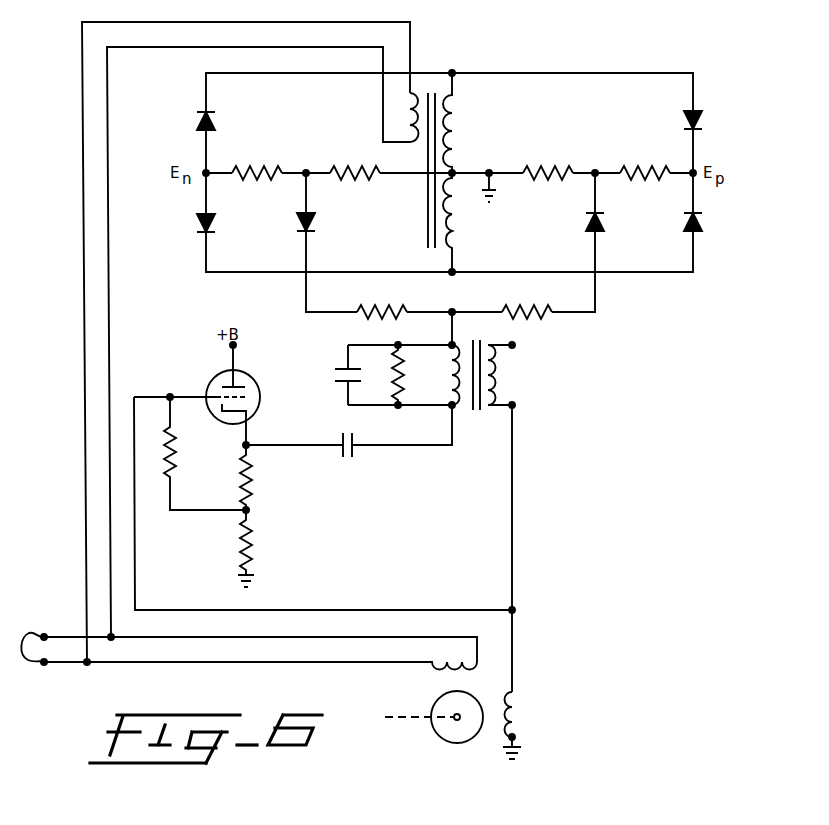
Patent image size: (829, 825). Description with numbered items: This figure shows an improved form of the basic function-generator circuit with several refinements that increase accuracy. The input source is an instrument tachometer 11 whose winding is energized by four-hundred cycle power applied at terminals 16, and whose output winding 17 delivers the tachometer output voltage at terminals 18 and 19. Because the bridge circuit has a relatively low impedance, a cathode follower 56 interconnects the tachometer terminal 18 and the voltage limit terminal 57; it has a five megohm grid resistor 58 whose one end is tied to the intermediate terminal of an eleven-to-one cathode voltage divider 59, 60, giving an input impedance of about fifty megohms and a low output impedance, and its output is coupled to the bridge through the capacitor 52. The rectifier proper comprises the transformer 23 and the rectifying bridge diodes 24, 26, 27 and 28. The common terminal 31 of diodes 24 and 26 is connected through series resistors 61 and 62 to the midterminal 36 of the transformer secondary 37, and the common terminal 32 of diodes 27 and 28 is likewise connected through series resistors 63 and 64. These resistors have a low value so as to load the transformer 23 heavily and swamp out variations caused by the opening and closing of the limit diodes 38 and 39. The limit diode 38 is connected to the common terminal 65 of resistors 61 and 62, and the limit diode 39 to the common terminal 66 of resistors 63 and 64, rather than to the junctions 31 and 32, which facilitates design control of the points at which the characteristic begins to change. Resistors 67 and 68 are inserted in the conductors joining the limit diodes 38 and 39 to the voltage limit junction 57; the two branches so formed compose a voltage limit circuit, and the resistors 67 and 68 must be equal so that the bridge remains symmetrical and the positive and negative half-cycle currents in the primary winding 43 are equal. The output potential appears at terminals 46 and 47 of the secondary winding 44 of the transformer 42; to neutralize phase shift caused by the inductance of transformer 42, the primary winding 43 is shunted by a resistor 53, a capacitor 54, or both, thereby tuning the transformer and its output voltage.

The instrument tachometer 11 is at (418, 702).
The terminals 16 is at (29, 633).
The output winding 17 is at (519, 700).
The terminal 18 is at (516, 609).
The terminal 19 is at (519, 737).
The transformer 23 is at (429, 226).
The rectifying bridge diode 24 is at (196, 117).
The rectifying bridge diode 26 is at (196, 222).
The rectifying bridge diode 27 is at (700, 120).
The rectifying bridge diode 28 is at (702, 226).
The common terminal 31 is at (208, 176).
The common terminal 32 is at (691, 176).
The midterminal 36 is at (455, 172).
The transformer secondary 37 is at (452, 130).
The limit diode 38 is at (298, 225).
The limit diode 39 is at (604, 226).
The transformer 42 is at (476, 412).
The primary winding 43 is at (456, 388).
The secondary winding 44 is at (497, 374).
The output terminal 46 is at (515, 406).
The output terminal 47 is at (515, 345).
The capacitor 52 is at (357, 455).
The resistor 53 is at (404, 371).
The capacitor 54 is at (340, 376).
The cathode follower 56 is at (258, 407).
The voltage limit terminal 57 is at (453, 311).
The grid resistor 58 is at (177, 470).
The cathode voltage divider resistor 59 is at (253, 492).
The cathode voltage divider resistor 60 is at (254, 556).
The series resistor 61 is at (250, 172).
The series resistor 62 is at (347, 172).
The series resistor 63 is at (530, 172).
The series resistor 64 is at (637, 172).
The common terminal 65 is at (306, 172).
The common terminal 66 is at (594, 172).
The resistor 67 is at (387, 311).
The resistor 68 is at (532, 311).